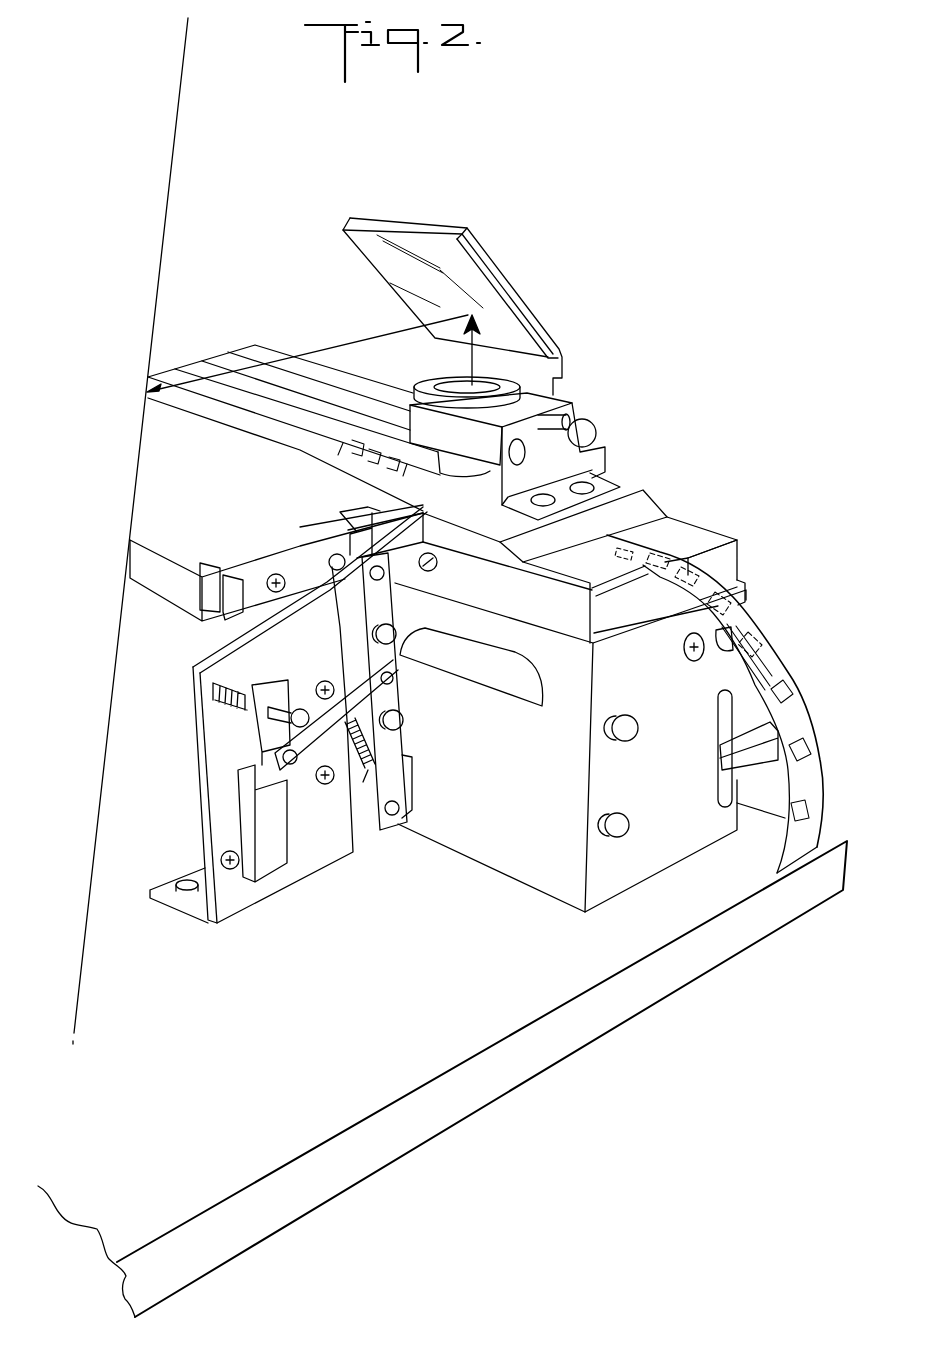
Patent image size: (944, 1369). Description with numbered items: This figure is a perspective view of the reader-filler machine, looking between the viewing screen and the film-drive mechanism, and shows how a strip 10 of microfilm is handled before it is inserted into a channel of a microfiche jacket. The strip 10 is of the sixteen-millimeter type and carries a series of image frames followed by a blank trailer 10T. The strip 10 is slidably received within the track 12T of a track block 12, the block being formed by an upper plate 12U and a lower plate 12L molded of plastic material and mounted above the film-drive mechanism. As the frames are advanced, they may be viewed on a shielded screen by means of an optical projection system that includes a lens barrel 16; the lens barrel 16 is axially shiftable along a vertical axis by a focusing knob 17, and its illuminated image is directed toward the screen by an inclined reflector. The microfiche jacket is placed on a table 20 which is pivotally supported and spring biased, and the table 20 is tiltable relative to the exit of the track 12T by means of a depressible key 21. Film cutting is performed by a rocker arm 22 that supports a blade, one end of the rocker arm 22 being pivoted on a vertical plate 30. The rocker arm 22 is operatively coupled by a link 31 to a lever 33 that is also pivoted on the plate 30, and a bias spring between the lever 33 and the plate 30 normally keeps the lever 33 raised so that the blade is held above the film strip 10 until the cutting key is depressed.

The strip of microfilm 10 is at (715, 704).
The blank trailer 10T is at (795, 843).
The track block 12 is at (736, 552).
The track 12T is at (680, 556).
The upper plate 12U is at (738, 544).
The lower plate 12L is at (728, 570).
The lens barrel 16 is at (562, 370).
The focusing knob 17 is at (596, 432).
The table 20 is at (173, 594).
The depressible key 21 is at (755, 733).
The rocker arm 22 is at (368, 505).
The vertical plate 30 is at (210, 743).
The link 31 is at (390, 742).
The lever 33 is at (360, 827).